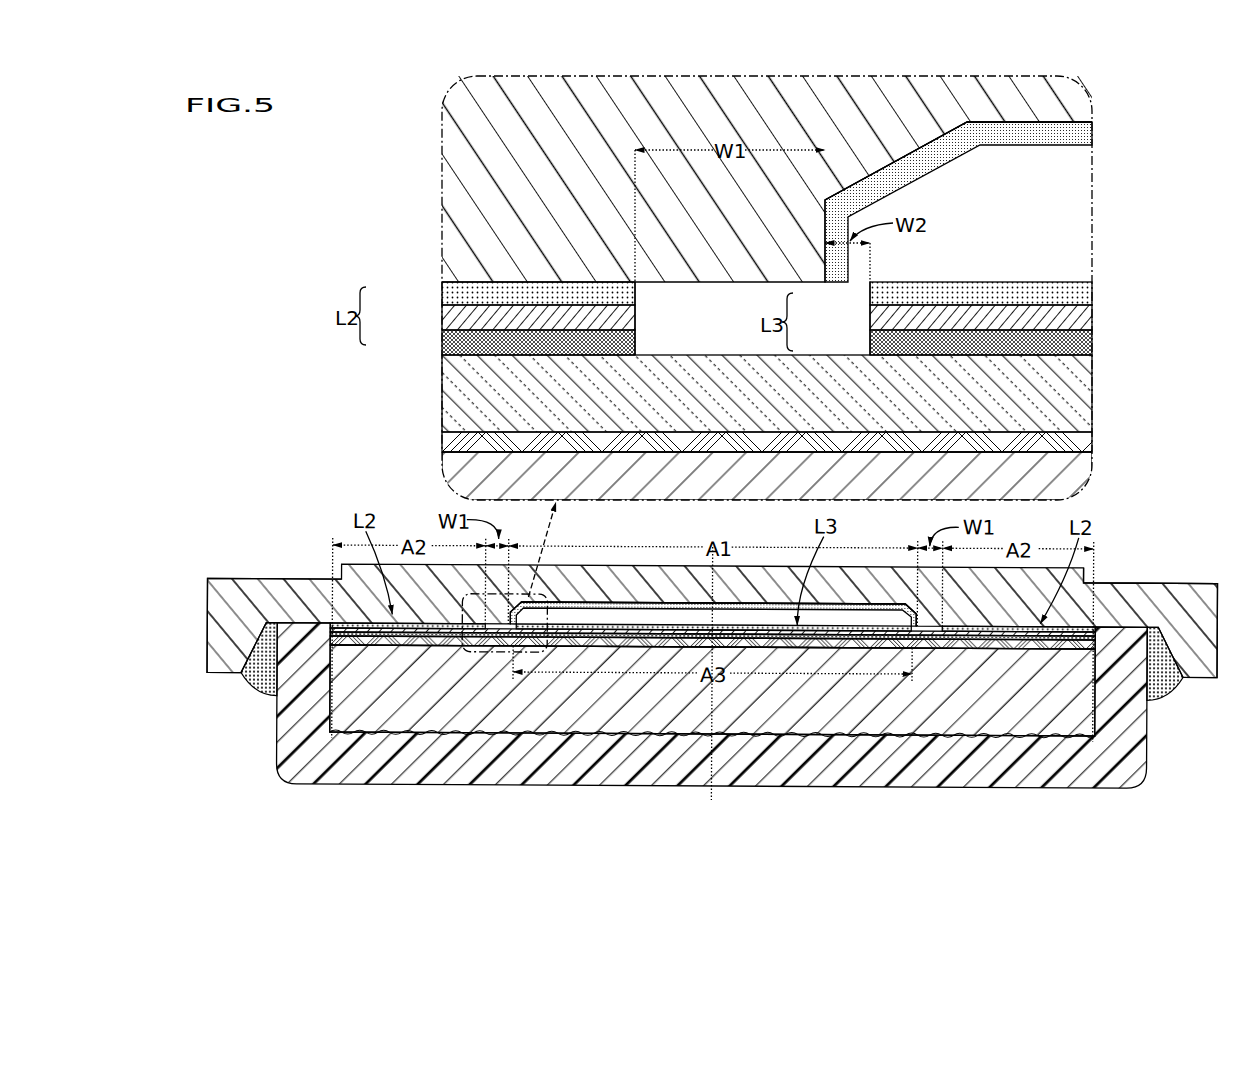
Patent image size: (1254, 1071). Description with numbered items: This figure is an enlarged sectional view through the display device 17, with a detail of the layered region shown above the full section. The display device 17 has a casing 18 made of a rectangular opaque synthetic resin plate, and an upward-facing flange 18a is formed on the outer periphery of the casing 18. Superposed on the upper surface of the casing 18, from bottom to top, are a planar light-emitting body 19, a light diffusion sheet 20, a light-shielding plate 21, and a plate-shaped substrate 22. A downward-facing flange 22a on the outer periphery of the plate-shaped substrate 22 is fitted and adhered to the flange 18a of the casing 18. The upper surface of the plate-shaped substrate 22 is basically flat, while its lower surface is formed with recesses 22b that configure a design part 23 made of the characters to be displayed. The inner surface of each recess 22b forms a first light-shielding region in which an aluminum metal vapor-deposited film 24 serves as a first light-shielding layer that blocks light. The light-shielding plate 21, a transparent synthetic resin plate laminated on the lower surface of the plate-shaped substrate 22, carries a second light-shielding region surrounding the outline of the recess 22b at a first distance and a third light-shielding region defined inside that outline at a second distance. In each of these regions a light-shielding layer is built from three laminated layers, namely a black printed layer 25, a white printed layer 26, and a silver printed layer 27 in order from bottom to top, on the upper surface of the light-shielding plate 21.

The display device 17 is at (1157, 572).
The casing 18 is at (1150, 755).
The flange 18a is at (300, 675).
The planar light-emitting body 19 is at (1063, 472).
The light diffusion sheet 20 is at (1098, 444).
The light-shielding plate 21 is at (1098, 285).
The plate-shaped substrate 22 is at (437, 168).
The flange 22a is at (212, 635).
The recess 22b is at (984, 147).
The design part 23 is at (1064, 112).
The aluminum metal vapor-deposited film 24 is at (1010, 147).
The black printed layer 25 is at (452, 343).
The white printed layer 26 is at (450, 318).
The silver printed layer 27 is at (450, 292).